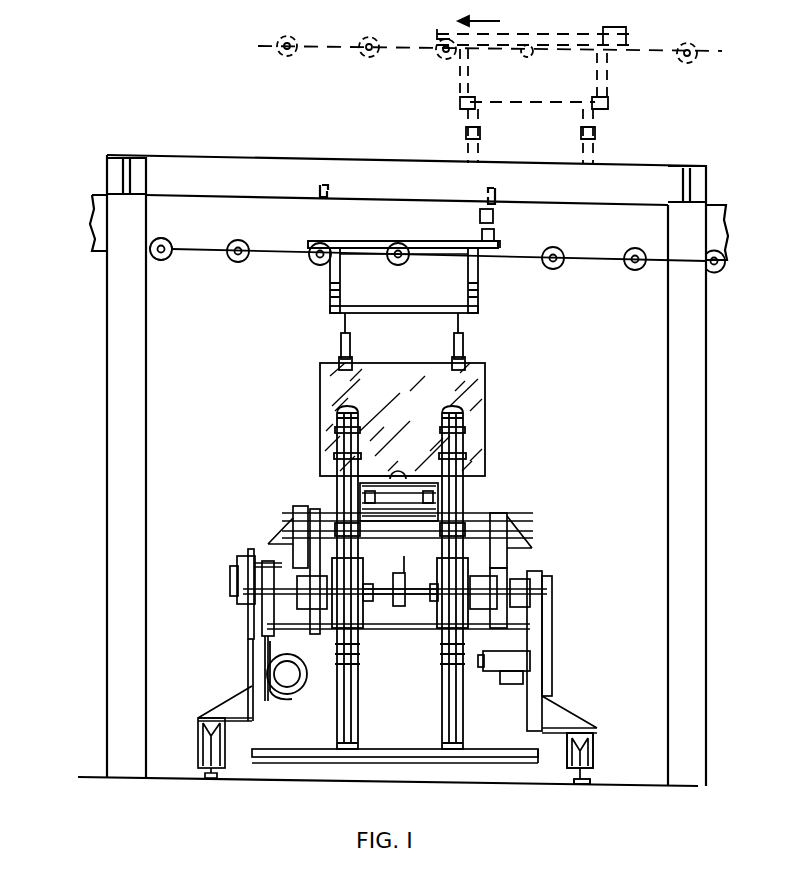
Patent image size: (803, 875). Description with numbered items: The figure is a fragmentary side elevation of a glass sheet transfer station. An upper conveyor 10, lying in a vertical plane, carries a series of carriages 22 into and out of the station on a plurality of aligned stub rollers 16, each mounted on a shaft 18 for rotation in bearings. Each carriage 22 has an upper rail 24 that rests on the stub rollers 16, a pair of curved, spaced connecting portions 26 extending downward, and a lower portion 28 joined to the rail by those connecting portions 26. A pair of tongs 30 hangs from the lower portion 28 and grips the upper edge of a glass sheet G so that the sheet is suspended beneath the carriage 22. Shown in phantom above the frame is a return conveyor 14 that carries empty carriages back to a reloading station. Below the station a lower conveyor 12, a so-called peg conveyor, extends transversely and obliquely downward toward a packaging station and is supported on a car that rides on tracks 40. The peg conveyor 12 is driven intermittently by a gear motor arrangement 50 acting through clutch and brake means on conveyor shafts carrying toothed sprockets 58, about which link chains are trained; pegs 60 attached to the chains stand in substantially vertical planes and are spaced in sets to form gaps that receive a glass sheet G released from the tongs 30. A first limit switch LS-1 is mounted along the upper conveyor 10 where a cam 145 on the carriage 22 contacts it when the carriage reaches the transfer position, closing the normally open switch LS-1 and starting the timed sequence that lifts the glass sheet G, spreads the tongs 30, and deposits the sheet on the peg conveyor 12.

The upper conveyor 10 is at (604, 276).
The lower conveyor 12 is at (500, 498).
The return conveyor 14 is at (367, 78).
The stub rollers 16 is at (165, 260).
The shaft 18 is at (167, 246).
The carriage 22 is at (512, 312).
The upper rail 24 is at (358, 240).
The connecting portions 26 is at (342, 296).
The lower portion 28 is at (399, 318).
The tongs 30 is at (340, 346).
The tracks 40 is at (592, 783).
The gear motor arrangement 50 is at (315, 677).
The toothed sprockets 58 is at (432, 628).
The pegs 60 is at (338, 491).
The cam 145 is at (496, 234).
The first limit switch LS-1 is at (494, 215).
The glass sheet G is at (488, 420).